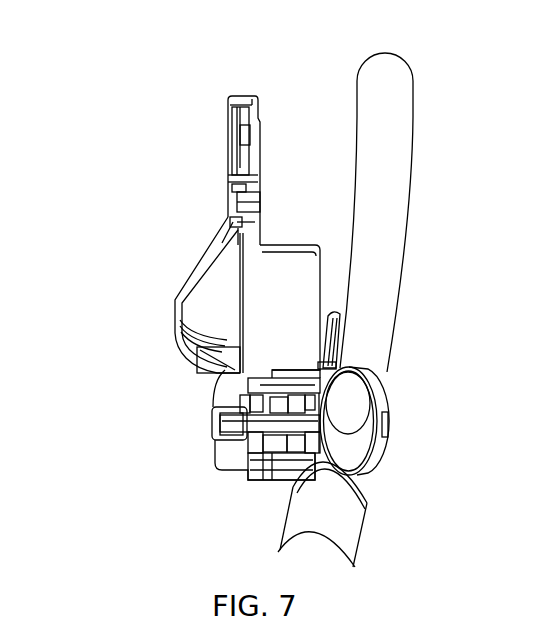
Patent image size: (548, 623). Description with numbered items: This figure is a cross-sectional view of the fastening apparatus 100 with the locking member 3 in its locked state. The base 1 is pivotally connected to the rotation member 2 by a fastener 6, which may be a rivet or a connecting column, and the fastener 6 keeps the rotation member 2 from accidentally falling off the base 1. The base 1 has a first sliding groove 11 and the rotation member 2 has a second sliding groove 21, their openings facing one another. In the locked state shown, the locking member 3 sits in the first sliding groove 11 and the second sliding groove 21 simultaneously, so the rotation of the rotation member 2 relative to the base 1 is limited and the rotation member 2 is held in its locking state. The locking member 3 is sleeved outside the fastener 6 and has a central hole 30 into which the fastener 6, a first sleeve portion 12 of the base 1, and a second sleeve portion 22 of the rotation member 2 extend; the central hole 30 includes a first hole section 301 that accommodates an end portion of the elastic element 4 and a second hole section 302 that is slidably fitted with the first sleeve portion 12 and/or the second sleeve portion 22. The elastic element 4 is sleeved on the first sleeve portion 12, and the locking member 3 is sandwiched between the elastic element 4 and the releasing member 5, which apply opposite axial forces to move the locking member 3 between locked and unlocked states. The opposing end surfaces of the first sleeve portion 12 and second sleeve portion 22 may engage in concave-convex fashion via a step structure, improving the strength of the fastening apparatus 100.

The fastening apparatus 100 is at (320, 44).
The base 1 is at (378, 393).
The first sliding groove 11 is at (302, 394).
The first sleeve portion 12 is at (312, 417).
The rotation member 2 is at (268, 325).
The central hole 30 is at (72, 267).
The first hole section 301 is at (268, 402).
The second hole section 302 is at (255, 407).
The releasing member 5 is at (207, 418).
The fastener 6 is at (295, 428).
The locking member 3 is at (272, 450).
The second sliding groove 21 is at (252, 452).
The second sleeve portion 22 is at (245, 438).
The elastic element 4 is at (288, 442).